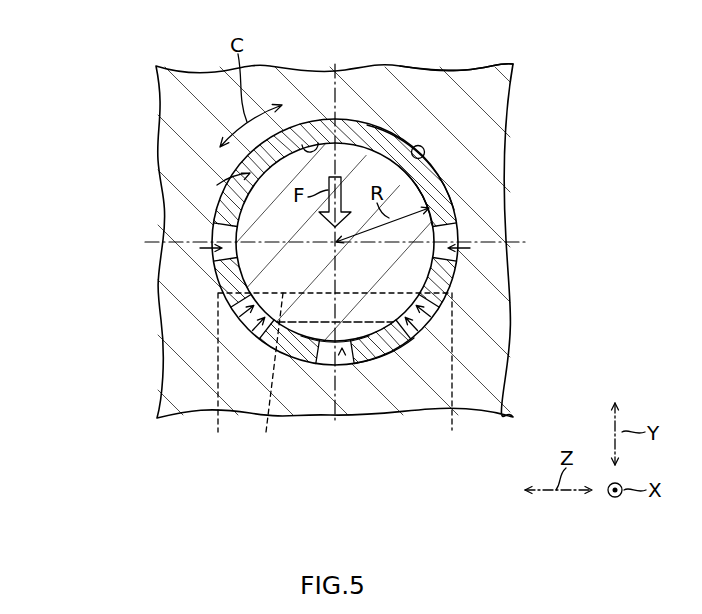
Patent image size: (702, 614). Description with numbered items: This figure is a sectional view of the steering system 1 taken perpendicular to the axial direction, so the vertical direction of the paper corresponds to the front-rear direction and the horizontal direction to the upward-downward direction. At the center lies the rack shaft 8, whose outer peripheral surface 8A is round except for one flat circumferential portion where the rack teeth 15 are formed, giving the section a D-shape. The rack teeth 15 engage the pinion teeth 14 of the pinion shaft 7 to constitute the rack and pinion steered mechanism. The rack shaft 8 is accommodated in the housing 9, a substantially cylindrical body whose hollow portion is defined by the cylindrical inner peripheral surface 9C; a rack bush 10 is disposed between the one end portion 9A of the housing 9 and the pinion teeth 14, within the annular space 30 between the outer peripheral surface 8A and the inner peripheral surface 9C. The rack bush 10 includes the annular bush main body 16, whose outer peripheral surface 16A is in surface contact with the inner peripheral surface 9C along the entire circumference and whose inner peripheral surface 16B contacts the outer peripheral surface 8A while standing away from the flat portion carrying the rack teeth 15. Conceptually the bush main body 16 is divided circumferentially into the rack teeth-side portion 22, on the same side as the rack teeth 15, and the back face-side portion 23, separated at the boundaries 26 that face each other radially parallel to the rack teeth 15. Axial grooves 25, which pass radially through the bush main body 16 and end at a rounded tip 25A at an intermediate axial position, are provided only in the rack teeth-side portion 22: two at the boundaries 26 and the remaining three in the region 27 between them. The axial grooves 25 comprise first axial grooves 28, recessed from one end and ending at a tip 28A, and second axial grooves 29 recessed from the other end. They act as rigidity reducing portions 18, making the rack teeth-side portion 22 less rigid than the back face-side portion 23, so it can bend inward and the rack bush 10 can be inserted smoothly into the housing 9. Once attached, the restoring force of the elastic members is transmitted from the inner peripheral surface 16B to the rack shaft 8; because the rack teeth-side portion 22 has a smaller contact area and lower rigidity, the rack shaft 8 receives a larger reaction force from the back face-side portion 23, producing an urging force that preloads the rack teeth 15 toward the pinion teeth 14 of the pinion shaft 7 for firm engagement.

The steering system 1 is at (345, 514).
The pinion shaft 7 is at (217, 426).
The rack shaft 8 is at (403, 170).
The outer peripheral surface 8A is at (412, 192).
The housing 9 is at (482, 80).
The one end portion 9A is at (443, 87).
The inner peripheral surface 9C is at (419, 148).
The rack bush 10 is at (392, 355).
The pinion teeth 14 is at (268, 375).
The rack teeth 15 is at (316, 359).
The bush main body 16 is at (395, 140).
The outer peripheral surface 16A is at (373, 127).
The inner peripheral surface 16B is at (316, 144).
The rigidity reducing portions 18 is at (420, 320).
The rack teeth-side portion 22 is at (440, 322).
The back face-side portion 23 is at (420, 206).
The axial grooves 25 is at (332, 321).
The tip 25A is at (427, 334).
The boundaries 26 is at (453, 226).
The region 27 is at (318, 365).
The first axial grooves 28 is at (332, 321).
The tip 28A is at (334, 351).
The second axial grooves 29 is at (455, 259).
The space 30 is at (212, 186).